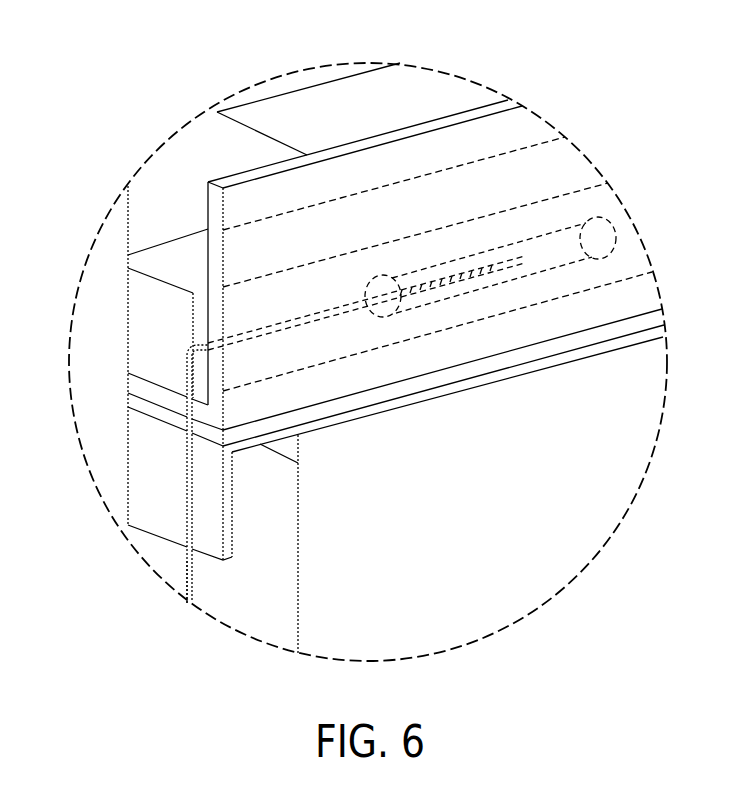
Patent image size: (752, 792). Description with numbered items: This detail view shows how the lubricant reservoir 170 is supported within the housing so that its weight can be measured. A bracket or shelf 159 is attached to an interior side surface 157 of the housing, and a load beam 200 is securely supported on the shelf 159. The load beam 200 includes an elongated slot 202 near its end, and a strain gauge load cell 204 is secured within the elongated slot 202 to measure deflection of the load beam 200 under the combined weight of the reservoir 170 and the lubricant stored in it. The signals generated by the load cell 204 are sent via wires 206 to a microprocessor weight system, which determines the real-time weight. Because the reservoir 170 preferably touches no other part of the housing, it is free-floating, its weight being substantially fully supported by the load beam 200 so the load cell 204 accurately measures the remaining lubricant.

The reservoir 170 is at (330, 105).
The shelf 159 is at (215, 315).
The load beam 200 is at (155, 360).
The elongated slot 202 is at (393, 308).
The strain gauge load cell 204 is at (523, 265).
The wires 206 is at (192, 502).
The interior side surface 157 is at (225, 612).